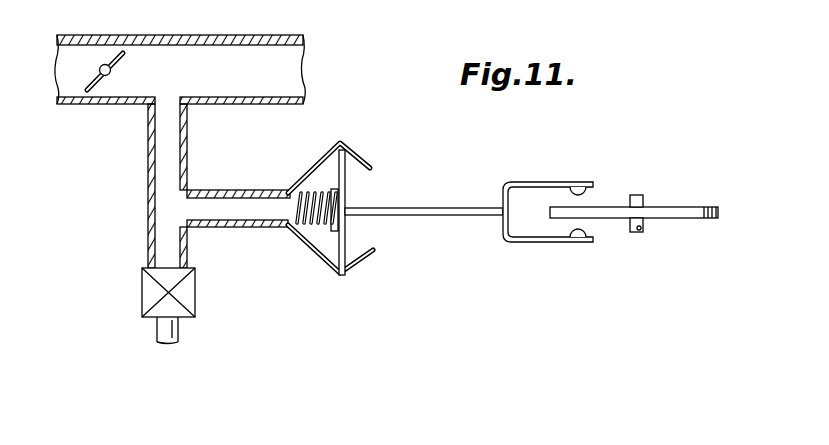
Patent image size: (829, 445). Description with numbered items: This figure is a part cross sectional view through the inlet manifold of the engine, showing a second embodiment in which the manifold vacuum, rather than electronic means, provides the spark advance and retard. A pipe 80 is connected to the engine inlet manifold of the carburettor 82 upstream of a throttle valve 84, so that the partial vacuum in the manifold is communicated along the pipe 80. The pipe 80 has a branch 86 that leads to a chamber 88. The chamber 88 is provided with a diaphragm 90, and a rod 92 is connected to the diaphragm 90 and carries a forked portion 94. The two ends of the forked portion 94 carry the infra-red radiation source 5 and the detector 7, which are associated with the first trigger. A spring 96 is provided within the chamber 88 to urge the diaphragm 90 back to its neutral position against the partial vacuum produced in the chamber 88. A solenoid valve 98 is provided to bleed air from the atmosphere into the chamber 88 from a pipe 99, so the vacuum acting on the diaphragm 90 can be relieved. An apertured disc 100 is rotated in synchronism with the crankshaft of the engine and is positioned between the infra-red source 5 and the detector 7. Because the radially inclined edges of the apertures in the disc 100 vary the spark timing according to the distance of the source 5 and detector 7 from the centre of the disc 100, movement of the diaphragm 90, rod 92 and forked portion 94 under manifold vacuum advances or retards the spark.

The carburettor 82 is at (303, 55).
The throttle valve 84 is at (124, 53).
The pipe 80 is at (163, 157).
The branch 86 is at (237, 212).
The chamber 88 is at (360, 143).
The diaphragm 90 is at (347, 171).
The rod 92 is at (417, 217).
The forked portion 94 is at (526, 186).
The infra-red radiation source 5 is at (590, 196).
The detector 7 is at (590, 230).
The spring 96 is at (313, 223).
The solenoid valve 98 is at (148, 287).
The pipe 99 is at (180, 328).
The apertured disc 100 is at (670, 212).